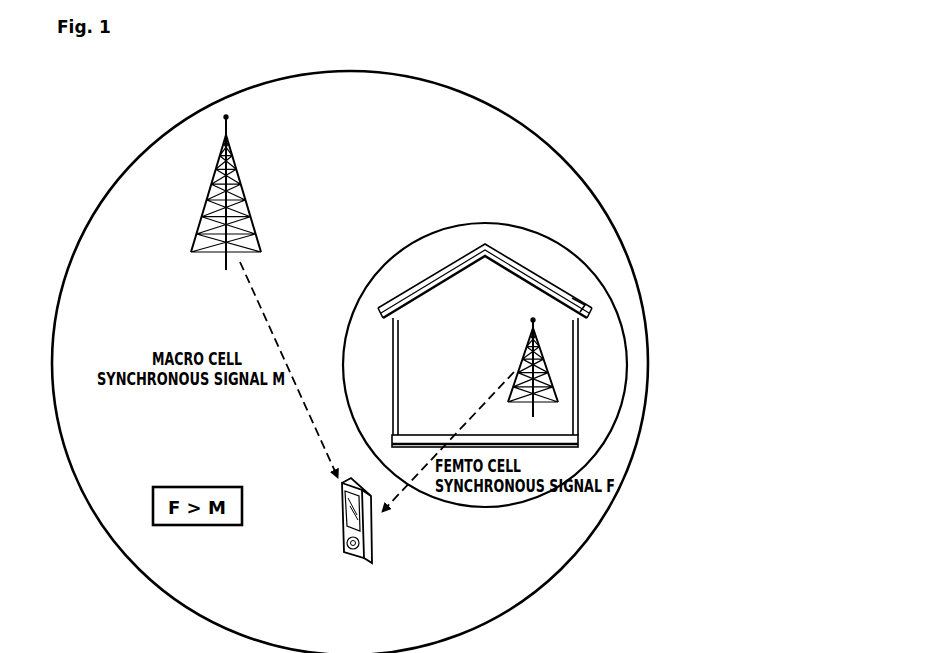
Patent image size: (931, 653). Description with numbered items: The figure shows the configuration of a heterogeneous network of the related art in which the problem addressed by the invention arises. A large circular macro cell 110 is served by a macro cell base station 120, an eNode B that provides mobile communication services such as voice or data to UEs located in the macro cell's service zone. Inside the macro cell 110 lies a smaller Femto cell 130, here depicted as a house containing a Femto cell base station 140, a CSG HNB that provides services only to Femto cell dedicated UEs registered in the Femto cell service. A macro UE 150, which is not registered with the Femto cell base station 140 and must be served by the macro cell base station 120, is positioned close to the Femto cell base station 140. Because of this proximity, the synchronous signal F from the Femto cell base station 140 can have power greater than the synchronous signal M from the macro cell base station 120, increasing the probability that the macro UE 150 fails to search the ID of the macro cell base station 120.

The macro cell 110 is at (463, 70).
The macro cell base station 120 is at (242, 185).
The Femto cell 130 is at (497, 205).
The Femto cell base station 140 is at (548, 363).
The macro UE 150 is at (372, 538).